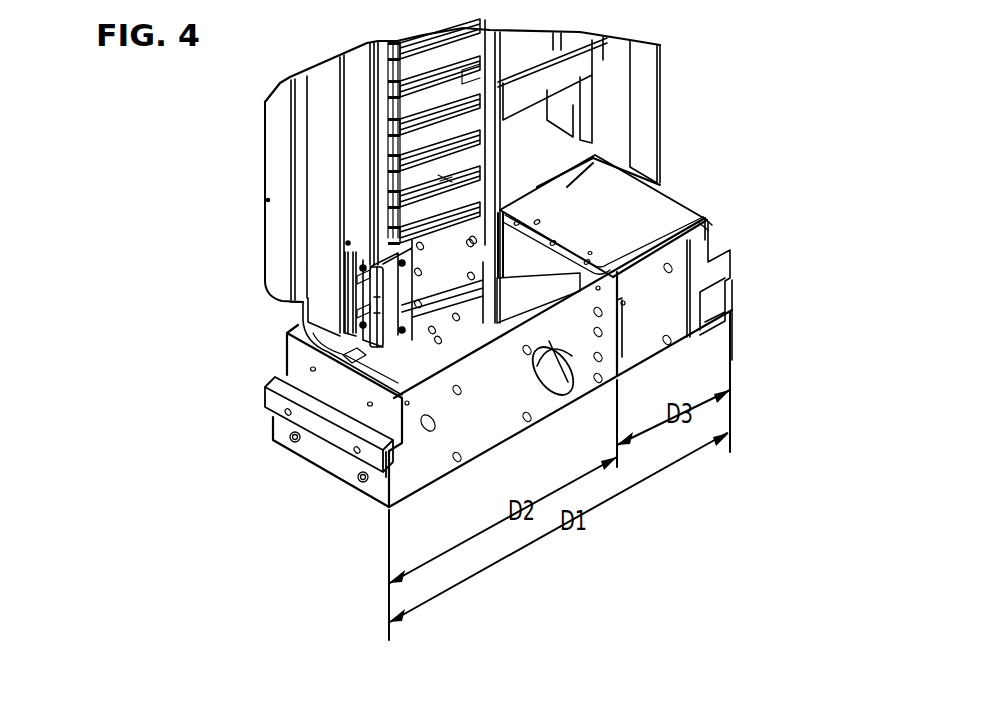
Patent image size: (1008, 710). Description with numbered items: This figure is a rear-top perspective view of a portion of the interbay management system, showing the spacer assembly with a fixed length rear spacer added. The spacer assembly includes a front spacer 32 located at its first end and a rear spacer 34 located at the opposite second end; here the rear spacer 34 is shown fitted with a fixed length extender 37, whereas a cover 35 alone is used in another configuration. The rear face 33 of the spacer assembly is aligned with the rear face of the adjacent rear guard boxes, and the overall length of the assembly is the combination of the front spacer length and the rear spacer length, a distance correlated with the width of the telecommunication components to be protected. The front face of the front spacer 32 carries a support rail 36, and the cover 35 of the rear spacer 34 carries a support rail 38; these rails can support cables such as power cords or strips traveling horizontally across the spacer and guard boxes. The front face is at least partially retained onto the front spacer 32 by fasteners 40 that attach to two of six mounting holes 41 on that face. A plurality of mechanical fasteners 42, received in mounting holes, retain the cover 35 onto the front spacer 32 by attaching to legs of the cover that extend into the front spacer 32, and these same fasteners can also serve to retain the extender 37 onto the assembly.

The front spacer 32 is at (500, 432).
The rear face 33 is at (700, 236).
The rear spacer 34 is at (693, 341).
The cover 35 is at (703, 220).
The support rail 36 is at (270, 403).
The fixed length extender 37 is at (638, 355).
The support rail 38 is at (730, 261).
The fasteners 40 is at (360, 481).
The mounting holes 41 is at (373, 407).
The mechanical fasteners 42 is at (598, 387).